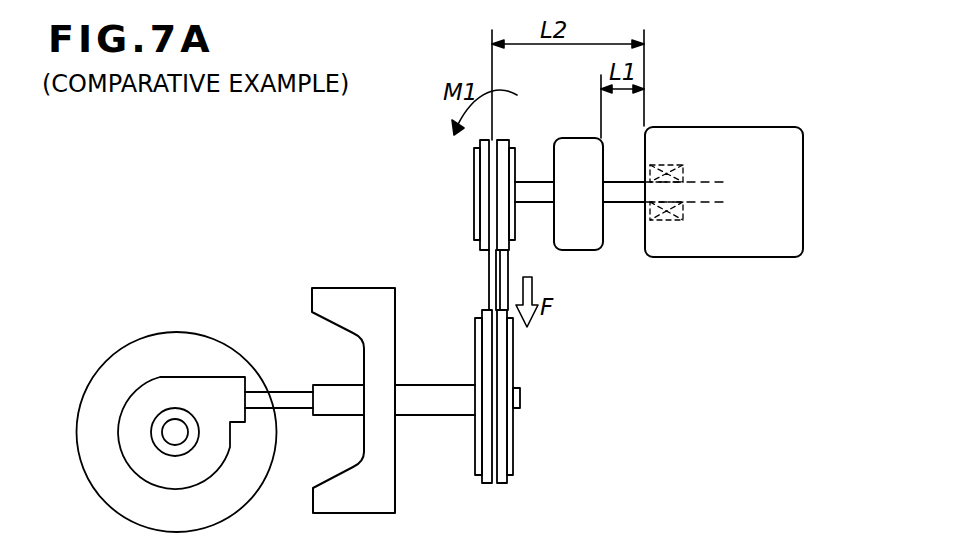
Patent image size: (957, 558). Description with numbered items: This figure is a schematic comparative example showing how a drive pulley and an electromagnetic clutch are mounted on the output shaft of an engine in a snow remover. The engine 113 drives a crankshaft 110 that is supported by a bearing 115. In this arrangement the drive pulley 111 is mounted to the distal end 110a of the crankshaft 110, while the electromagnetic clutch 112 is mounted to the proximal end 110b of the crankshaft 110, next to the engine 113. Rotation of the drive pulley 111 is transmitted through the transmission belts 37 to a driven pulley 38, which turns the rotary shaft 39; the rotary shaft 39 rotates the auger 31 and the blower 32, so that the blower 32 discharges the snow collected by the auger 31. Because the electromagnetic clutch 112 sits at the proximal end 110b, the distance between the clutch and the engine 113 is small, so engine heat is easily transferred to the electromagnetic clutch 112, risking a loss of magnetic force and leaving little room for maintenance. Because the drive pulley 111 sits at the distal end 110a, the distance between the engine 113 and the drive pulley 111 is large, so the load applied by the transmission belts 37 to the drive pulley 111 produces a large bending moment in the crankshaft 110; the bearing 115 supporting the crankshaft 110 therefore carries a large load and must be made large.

The auger 31 is at (180, 332).
The blower 32 is at (333, 288).
The transmission belts 37 is at (498, 280).
The driven pulley 38 is at (517, 455).
The rotary shaft 39 is at (435, 405).
The crankshaft 110 is at (613, 197).
The distal end of the crankshaft 110a is at (520, 205).
The proximal end of the crankshaft 110b is at (632, 193).
The drive pulley 111 is at (473, 168).
The electromagnetic clutch 112 is at (581, 138).
The engine 113 is at (758, 135).
The bearing 115 is at (682, 165).